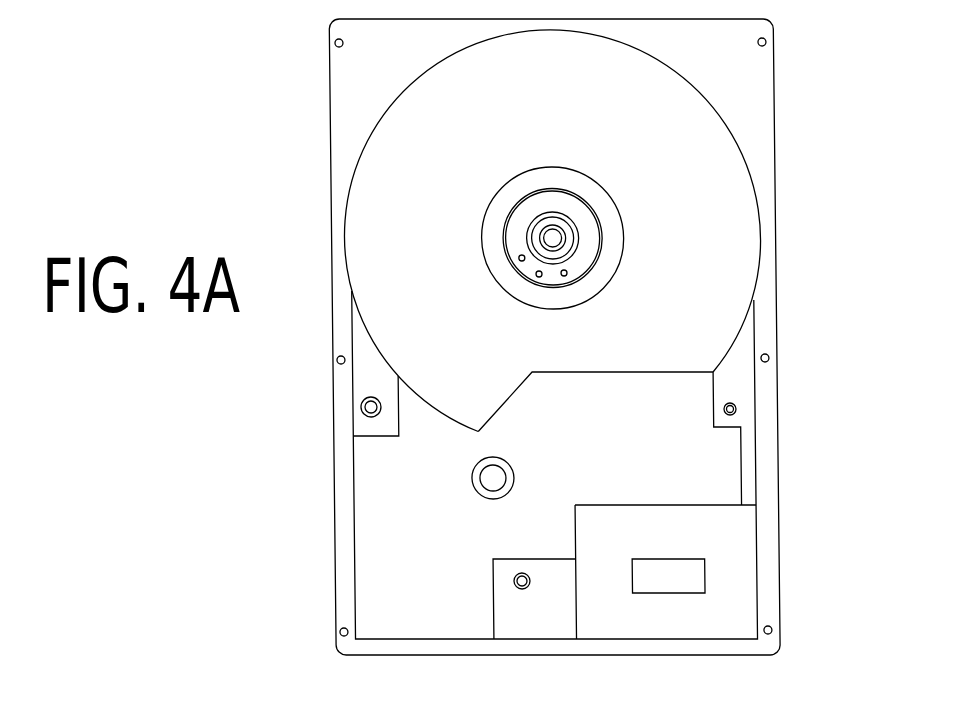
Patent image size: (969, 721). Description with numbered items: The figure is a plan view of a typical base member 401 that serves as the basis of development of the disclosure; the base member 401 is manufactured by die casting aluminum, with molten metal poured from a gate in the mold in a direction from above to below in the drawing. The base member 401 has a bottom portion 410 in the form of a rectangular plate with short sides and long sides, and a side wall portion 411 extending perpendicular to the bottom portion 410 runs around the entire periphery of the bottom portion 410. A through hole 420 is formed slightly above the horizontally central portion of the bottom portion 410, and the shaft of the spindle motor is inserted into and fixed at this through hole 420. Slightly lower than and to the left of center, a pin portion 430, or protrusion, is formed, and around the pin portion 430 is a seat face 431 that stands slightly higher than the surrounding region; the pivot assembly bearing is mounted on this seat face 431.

The base member 401 is at (811, 67).
The bottom portion 410 is at (720, 468).
The side wall portion 411 is at (760, 167).
The through hole 420 is at (568, 222).
The pin portion 430 is at (498, 487).
The seat face 431 is at (507, 463).